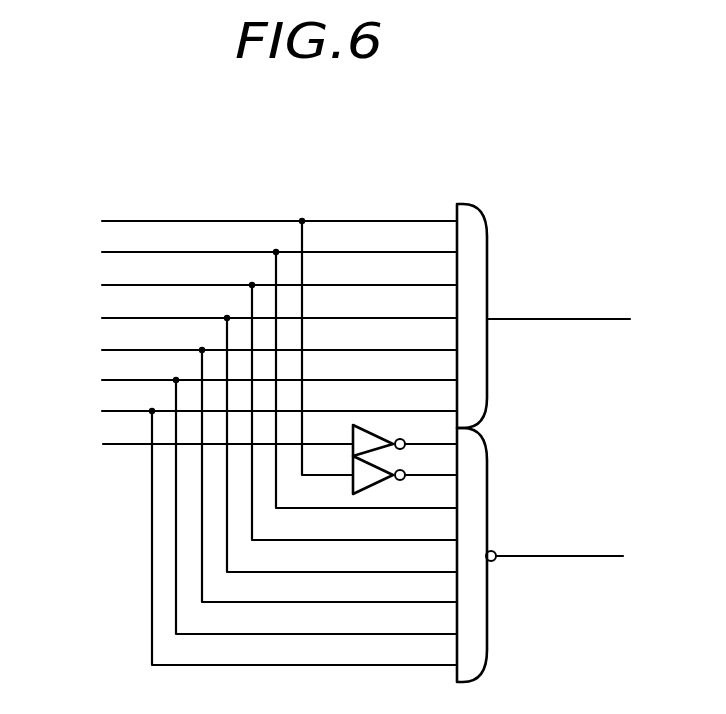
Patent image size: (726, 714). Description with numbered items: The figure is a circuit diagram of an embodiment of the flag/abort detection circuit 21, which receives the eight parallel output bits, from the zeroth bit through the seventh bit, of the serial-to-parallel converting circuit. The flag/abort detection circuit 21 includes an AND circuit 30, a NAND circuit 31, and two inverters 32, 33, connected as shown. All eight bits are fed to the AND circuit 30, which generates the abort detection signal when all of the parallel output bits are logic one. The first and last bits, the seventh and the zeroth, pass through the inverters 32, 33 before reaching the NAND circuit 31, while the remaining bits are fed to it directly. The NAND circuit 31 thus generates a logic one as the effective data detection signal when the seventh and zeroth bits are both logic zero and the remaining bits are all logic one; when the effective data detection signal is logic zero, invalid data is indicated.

The flag/abort detection circuit 21 is at (486, 89).
The AND circuit 30 is at (488, 230).
The NAND circuit 31 is at (488, 456).
The inverter 32 is at (378, 440).
The inverter 33 is at (378, 481).